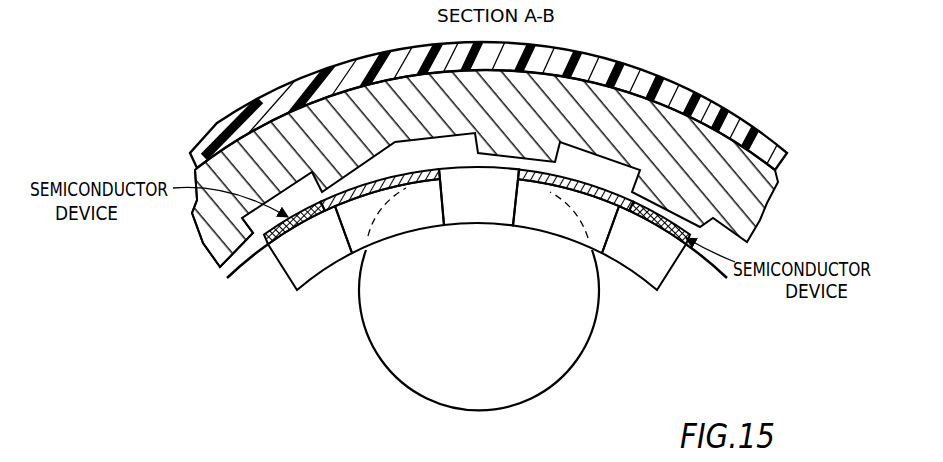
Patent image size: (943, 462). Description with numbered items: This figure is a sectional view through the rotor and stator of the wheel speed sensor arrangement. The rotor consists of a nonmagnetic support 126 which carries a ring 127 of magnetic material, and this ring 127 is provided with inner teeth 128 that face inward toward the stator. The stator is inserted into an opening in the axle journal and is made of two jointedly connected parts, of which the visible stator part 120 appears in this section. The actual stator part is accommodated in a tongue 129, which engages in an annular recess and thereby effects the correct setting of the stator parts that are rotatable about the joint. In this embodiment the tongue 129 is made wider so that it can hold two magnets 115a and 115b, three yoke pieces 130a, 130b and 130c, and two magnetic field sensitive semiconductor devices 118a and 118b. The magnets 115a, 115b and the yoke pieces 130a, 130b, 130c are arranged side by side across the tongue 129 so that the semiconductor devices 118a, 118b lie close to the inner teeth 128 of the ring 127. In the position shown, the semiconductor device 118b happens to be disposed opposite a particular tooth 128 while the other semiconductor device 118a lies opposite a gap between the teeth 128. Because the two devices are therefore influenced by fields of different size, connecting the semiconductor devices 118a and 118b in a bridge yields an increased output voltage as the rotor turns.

The magnet 115a is at (358, 254).
The magnet 115b is at (597, 254).
The magnetic field sensitive semiconductor device 118a is at (270, 258).
The magnetic field sensitive semiconductor device 118b is at (693, 257).
The stator part 120 is at (400, 333).
The nonmagnetic support 126 is at (215, 135).
The ring of magnetic material 127 is at (227, 205).
The inner teeth 128 is at (331, 166).
The tongue 129 is at (680, 270).
The yoke piece 130a is at (294, 292).
The yoke piece 130b is at (663, 264).
The yoke piece 130c is at (488, 208).